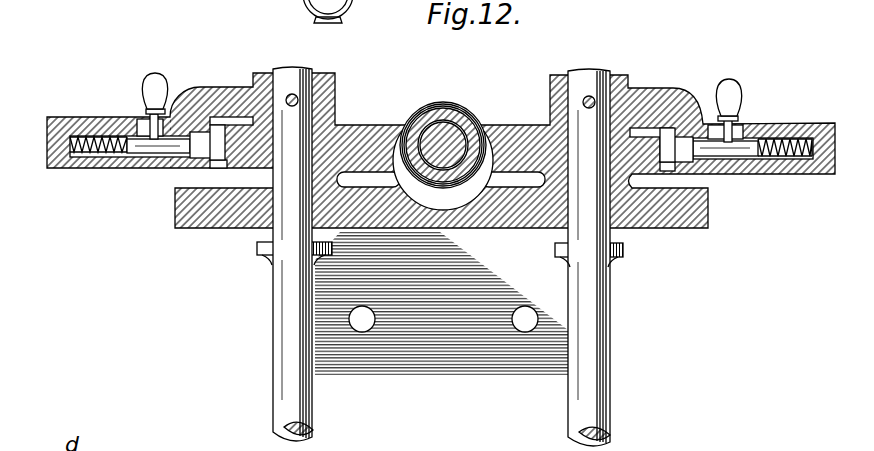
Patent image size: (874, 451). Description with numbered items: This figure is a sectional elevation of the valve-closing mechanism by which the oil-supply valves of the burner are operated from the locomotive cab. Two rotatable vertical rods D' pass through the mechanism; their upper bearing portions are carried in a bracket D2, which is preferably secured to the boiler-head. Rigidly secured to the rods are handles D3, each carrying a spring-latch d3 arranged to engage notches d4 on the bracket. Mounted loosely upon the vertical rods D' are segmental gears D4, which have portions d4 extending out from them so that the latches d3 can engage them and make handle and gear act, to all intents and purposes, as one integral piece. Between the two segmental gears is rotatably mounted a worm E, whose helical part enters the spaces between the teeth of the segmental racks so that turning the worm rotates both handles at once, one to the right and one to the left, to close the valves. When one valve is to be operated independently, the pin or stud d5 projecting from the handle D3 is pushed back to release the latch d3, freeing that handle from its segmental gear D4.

The rotatable vertical rods D' is at (440, 237).
The bracket D2 is at (512, 229).
The handles D3 is at (92, 157).
The segmental gears D4 is at (380, 114).
The worm E is at (442, 108).
The spring-latches d3 is at (221, 145).
The notches d4 is at (233, 130).
The pin or stud d5 is at (153, 83).